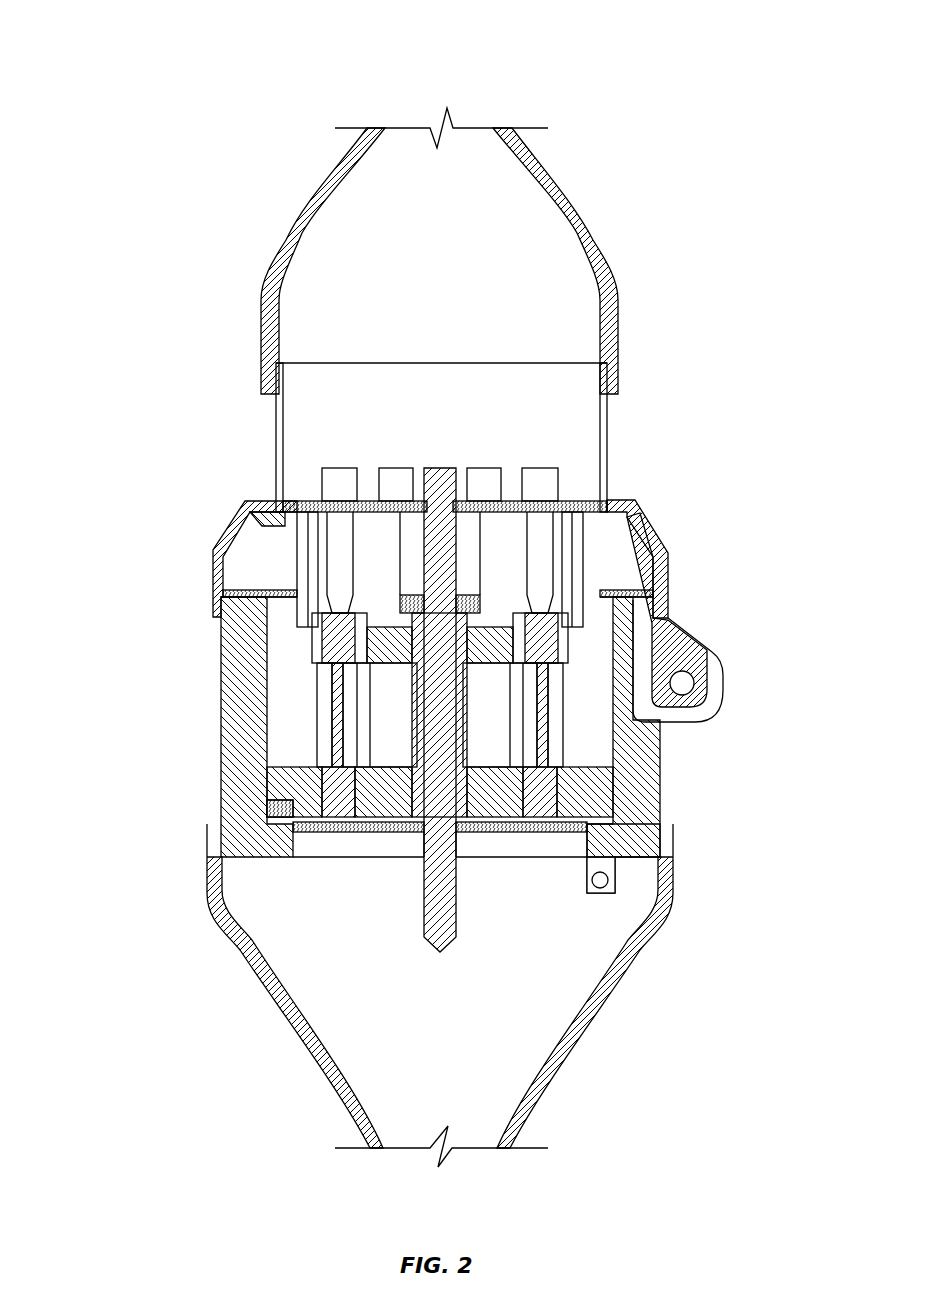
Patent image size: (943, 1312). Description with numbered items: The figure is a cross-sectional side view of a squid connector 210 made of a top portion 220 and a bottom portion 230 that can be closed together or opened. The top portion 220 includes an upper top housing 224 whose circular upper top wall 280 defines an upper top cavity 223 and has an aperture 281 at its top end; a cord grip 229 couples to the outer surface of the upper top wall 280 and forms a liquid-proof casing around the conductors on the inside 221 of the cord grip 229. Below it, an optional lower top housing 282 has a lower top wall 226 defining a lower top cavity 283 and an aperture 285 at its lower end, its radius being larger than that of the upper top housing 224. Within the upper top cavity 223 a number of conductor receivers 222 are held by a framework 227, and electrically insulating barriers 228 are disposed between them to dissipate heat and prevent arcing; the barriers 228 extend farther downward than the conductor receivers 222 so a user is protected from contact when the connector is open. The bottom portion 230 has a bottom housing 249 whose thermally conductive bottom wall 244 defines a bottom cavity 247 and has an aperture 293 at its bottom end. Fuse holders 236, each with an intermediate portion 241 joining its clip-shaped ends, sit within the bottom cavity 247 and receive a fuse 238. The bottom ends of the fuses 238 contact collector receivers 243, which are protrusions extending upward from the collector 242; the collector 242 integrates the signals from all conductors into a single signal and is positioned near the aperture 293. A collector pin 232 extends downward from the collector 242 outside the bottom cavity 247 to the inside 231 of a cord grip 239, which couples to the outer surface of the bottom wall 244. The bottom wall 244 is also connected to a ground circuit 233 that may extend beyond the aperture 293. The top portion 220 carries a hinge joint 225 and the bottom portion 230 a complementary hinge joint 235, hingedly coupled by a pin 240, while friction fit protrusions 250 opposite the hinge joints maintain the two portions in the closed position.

The squid connector 210 is at (145, 42).
The top portion 220 is at (467, 427).
The inside of cord grip 221 is at (538, 215).
The conductor receivers 222 is at (345, 468).
The upper top cavity 223 is at (507, 383).
The upper top housing 224 is at (487, 406).
The hinge joint 225 is at (617, 507).
The lower top wall 226 is at (655, 527).
The framework 227 is at (305, 500).
The electrically insulating barriers 228 is at (498, 530).
The cord grip 229 is at (330, 196).
The bottom portion 230 is at (389, 808).
The inside of cord grip 231 is at (440, 986).
The collector pin 232 is at (457, 926).
The ground circuit 233 is at (610, 882).
The hinge joint 235 is at (723, 685).
The fuse holders 236 is at (600, 845).
The fuse 238 is at (642, 768).
The cord grip 239 is at (295, 1002).
The pin 240 is at (684, 683).
The intermediate portion 241 is at (337, 723).
The collector 242 is at (318, 833).
The collector receivers 243 is at (340, 832).
The bottom wall 244 is at (439, 727).
The bottom cavity 247 is at (312, 693).
The bottom housing 249 is at (429, 872).
The friction fit protrusions 250 is at (217, 613).
The upper top wall 280 is at (607, 417).
The aperture 281 is at (420, 362).
The lower top housing 282 is at (211, 552).
The lower top cavity 283 is at (252, 567).
The aperture 285 is at (225, 642).
The aperture 293 is at (407, 858).